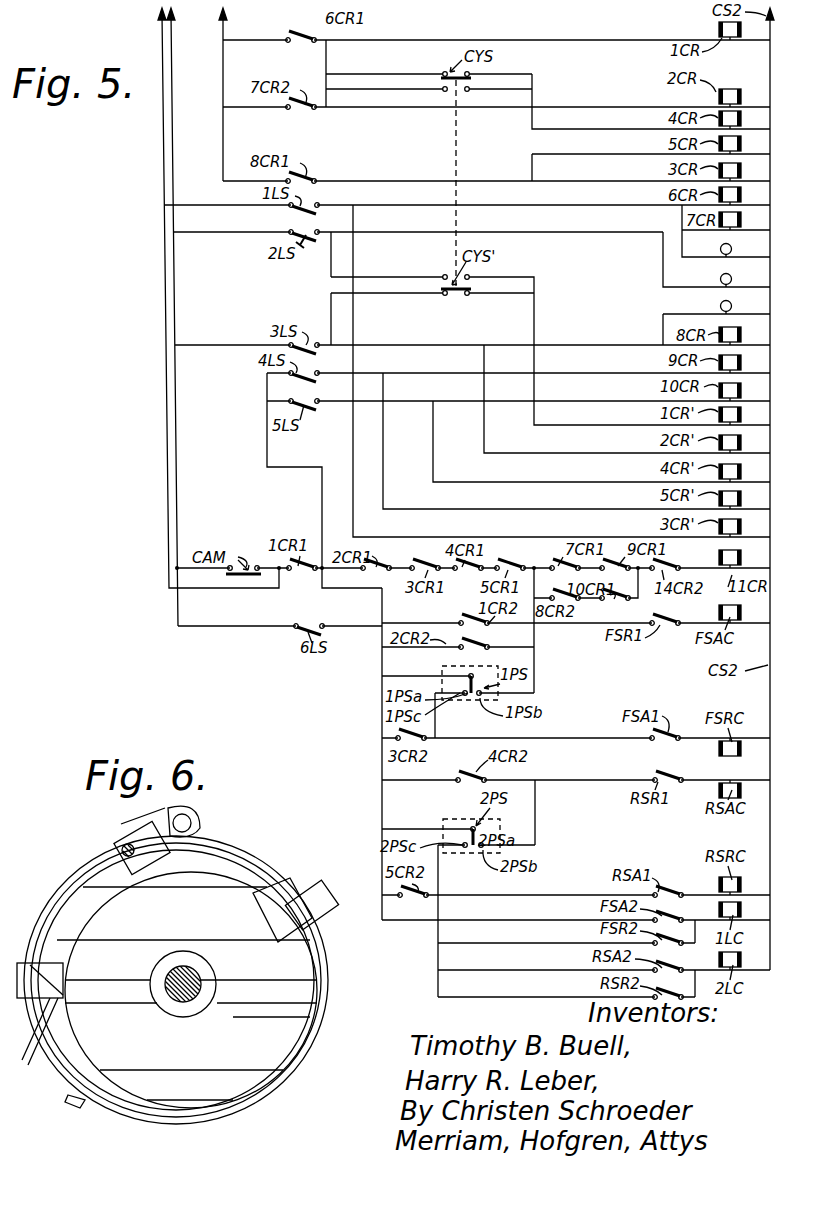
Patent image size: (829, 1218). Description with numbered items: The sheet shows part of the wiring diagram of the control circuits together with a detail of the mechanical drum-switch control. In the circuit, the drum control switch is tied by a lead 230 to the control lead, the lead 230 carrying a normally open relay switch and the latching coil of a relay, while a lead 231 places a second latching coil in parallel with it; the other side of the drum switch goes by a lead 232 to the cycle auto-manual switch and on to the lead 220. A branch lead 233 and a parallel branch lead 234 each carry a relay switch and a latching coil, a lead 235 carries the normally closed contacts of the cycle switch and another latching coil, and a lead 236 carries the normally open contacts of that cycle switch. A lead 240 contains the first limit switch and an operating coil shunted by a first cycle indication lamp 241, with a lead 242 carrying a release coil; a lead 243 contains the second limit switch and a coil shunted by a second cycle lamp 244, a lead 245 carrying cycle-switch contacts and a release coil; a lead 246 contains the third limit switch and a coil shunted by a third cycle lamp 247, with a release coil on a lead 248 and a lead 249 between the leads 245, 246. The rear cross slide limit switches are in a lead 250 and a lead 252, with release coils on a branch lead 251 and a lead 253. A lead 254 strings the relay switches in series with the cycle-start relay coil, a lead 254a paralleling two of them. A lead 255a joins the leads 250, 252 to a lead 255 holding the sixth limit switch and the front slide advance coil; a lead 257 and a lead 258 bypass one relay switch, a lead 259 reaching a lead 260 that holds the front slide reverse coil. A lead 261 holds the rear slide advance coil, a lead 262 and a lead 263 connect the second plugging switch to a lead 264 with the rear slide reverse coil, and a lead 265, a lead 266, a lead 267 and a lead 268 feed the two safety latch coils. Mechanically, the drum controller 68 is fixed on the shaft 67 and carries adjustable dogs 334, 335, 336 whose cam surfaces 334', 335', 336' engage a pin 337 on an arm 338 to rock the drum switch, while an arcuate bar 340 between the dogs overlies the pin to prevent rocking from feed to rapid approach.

In FIG. 5, the lead 220 is at (223, 40).
In FIG. 5, the lead 230 is at (224, 40).
In FIG. 5, the lead 231 is at (608, 155).
In FIG. 5, the lead 232 is at (162, 27).
In FIG. 5, the branch lead 233 is at (476, 40).
In FIG. 5, the parallel branch lead 234 is at (265, 108).
In FIG. 5, the lead 235 is at (388, 76).
In FIG. 5, the lead 236 is at (393, 92).
In FIG. 5, the lead 240 is at (530, 208).
In FIG. 5, the first cycle indication lamp 241 is at (721, 250).
In FIG. 5, the lead 242 is at (353, 255).
In FIG. 5, the lead 243 is at (186, 235).
In FIG. 5, the second cycle lamp 244 is at (720, 278).
In FIG. 5, the lead 245 is at (322, 278).
In FIG. 5, the lead 246 is at (210, 340).
In FIG. 5, the third cycle lamp 247 is at (720, 306).
In FIG. 5, the lead 248 is at (552, 453).
In FIG. 5, the lead 249 is at (410, 296).
In FIG. 5, the lead 250 is at (452, 372).
In FIG. 5, the branch lead 251 is at (383, 446).
In FIG. 5, the lead 252 is at (597, 398).
In FIG. 5, the lead 253 is at (597, 480).
In FIG. 5, the lead 254 is at (408, 567).
In FIG. 5, the lead 254a is at (592, 600).
In FIG. 5, the lead 255 is at (215, 628).
In FIG. 5, the lead 255a is at (322, 488).
In FIG. 5, the lead 257 is at (458, 638).
In FIG. 5, the lead 258 is at (427, 676).
In FIG. 5, the lead 259 is at (436, 730).
In FIG. 5, the lead 260 is at (542, 740).
In FIG. 5, the lead 261 is at (614, 780).
In FIG. 5, the lead 262 is at (405, 826).
In FIG. 5, the lead 263 is at (486, 921).
In FIG. 5, the lead 264 is at (548, 890).
In FIG. 5, the lead 265 is at (524, 920).
In FIG. 5, the lead 266 is at (524, 944).
In FIG. 5, the lead 267 is at (524, 970).
In FIG. 5, the lead 268 is at (529, 997).
In FIG. 6, the shaft 67 is at (218, 972).
In FIG. 6, the drum controller 68 is at (228, 1062).
In FIG. 6, the dog 334 is at (110, 847).
In FIG. 6, the cam surface 334' is at (121, 811).
In FIG. 6, the dog 335 is at (33, 938).
In FIG. 6, the cam surface 335' is at (33, 1047).
In FIG. 6, the dog 336 is at (314, 897).
In FIG. 6, the cam surface 336' is at (282, 890).
In FIG. 6, the pin 337 is at (120, 850).
In FIG. 6, the arm 338 is at (185, 805).
In FIG. 6, the arcuate bar 340 is at (68, 1100).